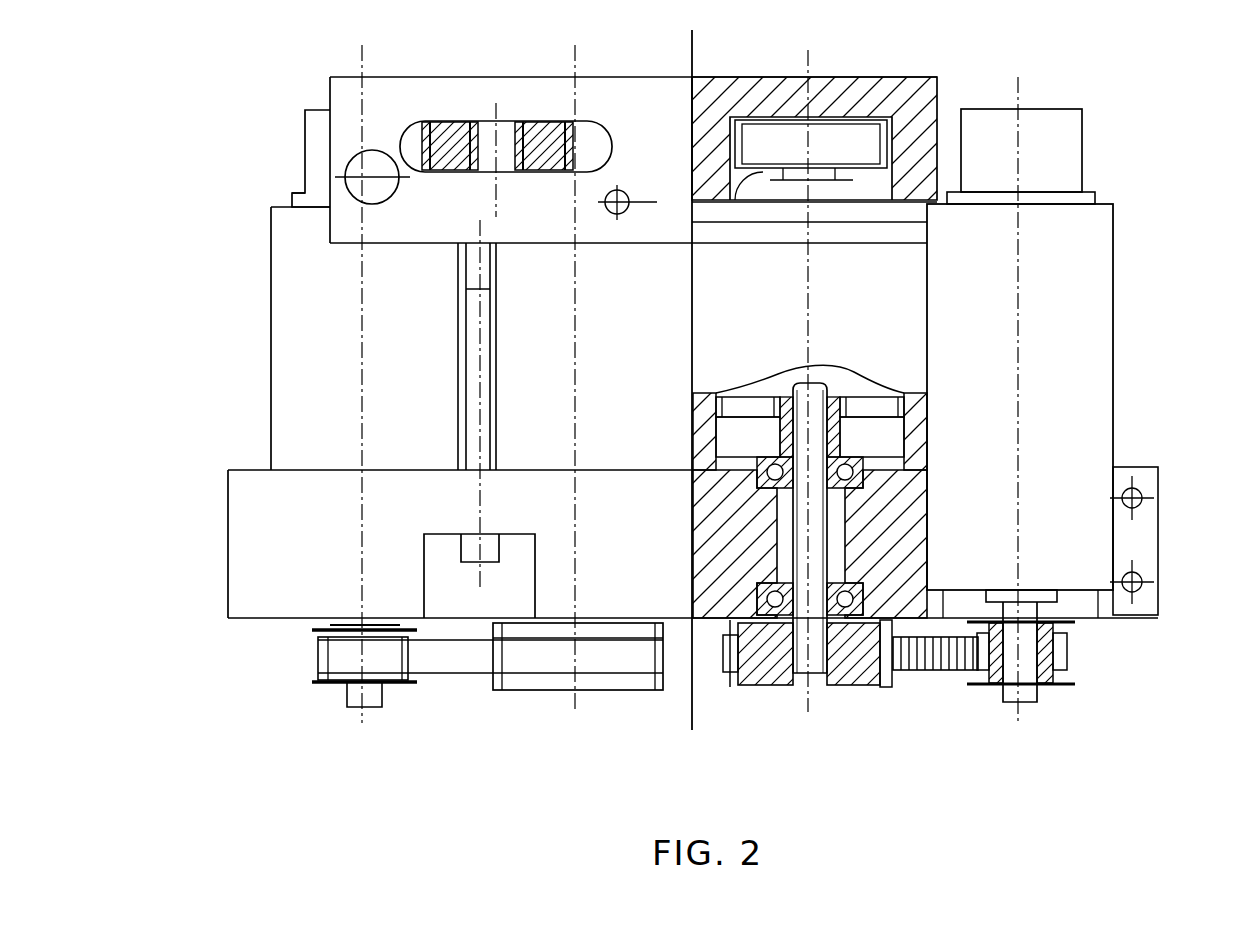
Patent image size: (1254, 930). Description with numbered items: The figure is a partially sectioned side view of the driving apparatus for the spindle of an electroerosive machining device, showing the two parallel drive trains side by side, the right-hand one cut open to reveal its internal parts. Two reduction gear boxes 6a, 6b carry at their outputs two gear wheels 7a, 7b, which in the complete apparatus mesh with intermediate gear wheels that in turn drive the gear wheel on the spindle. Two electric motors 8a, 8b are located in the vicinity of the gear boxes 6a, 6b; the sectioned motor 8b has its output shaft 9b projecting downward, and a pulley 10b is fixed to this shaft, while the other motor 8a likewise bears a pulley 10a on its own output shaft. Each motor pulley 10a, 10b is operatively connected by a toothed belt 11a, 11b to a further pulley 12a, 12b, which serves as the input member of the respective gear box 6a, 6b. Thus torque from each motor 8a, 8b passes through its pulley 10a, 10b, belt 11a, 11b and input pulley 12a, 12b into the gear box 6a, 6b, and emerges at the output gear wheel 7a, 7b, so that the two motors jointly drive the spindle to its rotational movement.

The reduction gear box 6a is at (520, 367).
The reduction gear box 6b is at (865, 322).
The gear wheel 7a is at (440, 147).
The gear wheel 7b is at (855, 145).
The electric motor 8a is at (328, 298).
The electric motor 8b is at (1068, 433).
The output shaft 9b is at (1027, 682).
The pulley 10a is at (336, 683).
The pulley 10b is at (1045, 658).
The toothed belt 11a is at (345, 656).
The toothed belt 11b is at (938, 668).
The pulley 12a is at (606, 678).
The pulley 12b is at (852, 690).